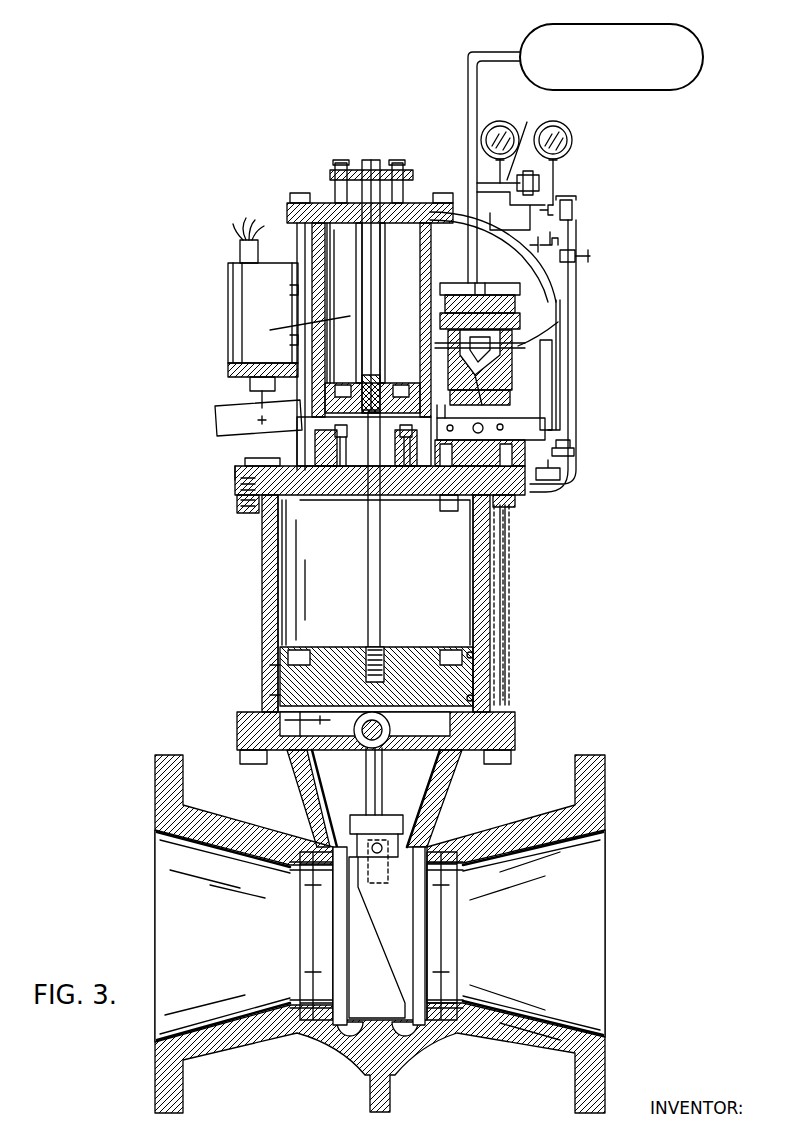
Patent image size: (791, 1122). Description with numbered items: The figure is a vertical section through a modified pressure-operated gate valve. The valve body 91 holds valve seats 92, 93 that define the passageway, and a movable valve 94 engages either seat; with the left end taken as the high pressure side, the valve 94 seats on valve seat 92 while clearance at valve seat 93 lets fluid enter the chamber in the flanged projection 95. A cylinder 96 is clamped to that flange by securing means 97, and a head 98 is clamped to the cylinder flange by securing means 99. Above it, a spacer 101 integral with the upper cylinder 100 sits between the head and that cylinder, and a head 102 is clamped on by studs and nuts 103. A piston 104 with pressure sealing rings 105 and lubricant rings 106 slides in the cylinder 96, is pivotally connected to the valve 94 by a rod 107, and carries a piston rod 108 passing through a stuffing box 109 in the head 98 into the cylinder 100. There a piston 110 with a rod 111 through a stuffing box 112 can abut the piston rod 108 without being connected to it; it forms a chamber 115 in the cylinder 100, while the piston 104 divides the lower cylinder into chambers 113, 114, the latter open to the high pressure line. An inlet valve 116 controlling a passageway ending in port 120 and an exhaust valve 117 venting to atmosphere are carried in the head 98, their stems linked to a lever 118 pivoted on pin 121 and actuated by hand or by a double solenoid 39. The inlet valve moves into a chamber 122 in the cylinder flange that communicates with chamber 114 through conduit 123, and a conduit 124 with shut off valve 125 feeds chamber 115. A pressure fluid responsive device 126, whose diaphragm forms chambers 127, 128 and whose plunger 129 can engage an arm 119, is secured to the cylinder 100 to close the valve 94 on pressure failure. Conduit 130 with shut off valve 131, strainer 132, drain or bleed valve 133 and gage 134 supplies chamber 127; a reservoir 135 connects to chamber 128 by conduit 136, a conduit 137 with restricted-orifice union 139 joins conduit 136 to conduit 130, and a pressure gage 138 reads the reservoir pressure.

The double solenoid 39 is at (228, 318).
The valve body 91 is at (330, 1060).
The valve seat 92 is at (445, 928).
The valve seat 93 is at (300, 945).
The movable valve 94 is at (412, 828).
The flanged projection 95 is at (470, 800).
The cylinder 96 is at (262, 602).
The securing means 97 is at (250, 764).
The head 98 is at (333, 496).
The securing means 99 is at (245, 455).
The cylinder 100 is at (297, 248).
The spacer 101 is at (297, 455).
The head 102 is at (343, 228).
The studs and nuts 103 is at (335, 178).
The piston 104 is at (400, 646).
The pressure sealing rings 105 is at (475, 655).
The lubricant rings 106 is at (262, 670).
The rod 107 is at (366, 790).
The piston rod 108 is at (380, 580).
The stuffing box 109 is at (385, 572).
The piston 110 is at (383, 381).
The rod 111 is at (368, 298).
The stuffing box 112 is at (380, 172).
The chamber 113 is at (282, 560).
The chamber 114 is at (237, 730).
The chamber 115 is at (302, 326).
The inlet valve 116 is at (515, 507).
The exhaust valve 117 is at (448, 511).
The lever 118 is at (530, 416).
The arm 119 is at (560, 356).
The port 120 is at (430, 492).
The pin 121 is at (482, 395).
The chamber 122 is at (505, 545).
The conduit 123 is at (509, 620).
The conduit 124 is at (574, 448).
The shut off valve 125 is at (560, 474).
The pressure fluid responsive device 126 is at (535, 280).
The chamber 127 is at (510, 325).
The chamber 128 is at (455, 312).
The plunger 129 is at (555, 325).
The conduit 130 is at (578, 285).
The shut off valve 131 is at (578, 244).
The strainer 132 is at (576, 210).
The drain or bleed valve 133 is at (493, 257).
The gage 134 is at (572, 142).
The reservoir 135 is at (668, 92).
The conduit 136 is at (468, 88).
The conduit 137 is at (526, 141).
The pressure gage 138 is at (500, 120).
The union 139 is at (539, 183).